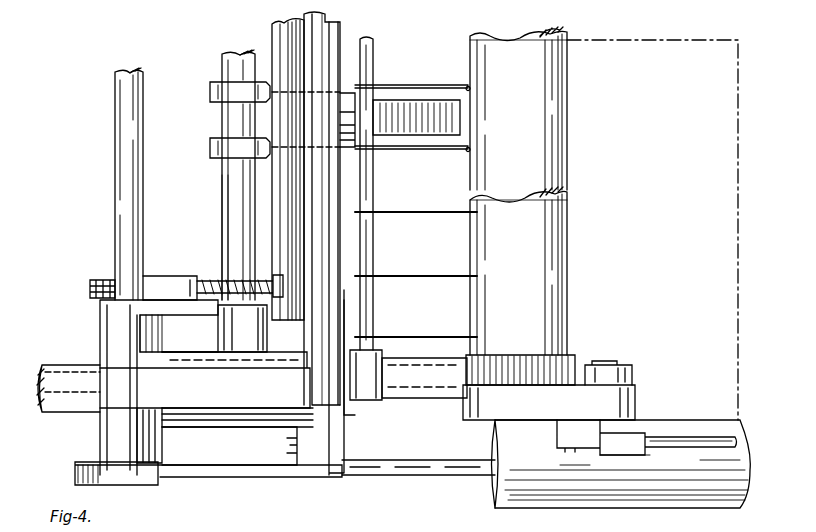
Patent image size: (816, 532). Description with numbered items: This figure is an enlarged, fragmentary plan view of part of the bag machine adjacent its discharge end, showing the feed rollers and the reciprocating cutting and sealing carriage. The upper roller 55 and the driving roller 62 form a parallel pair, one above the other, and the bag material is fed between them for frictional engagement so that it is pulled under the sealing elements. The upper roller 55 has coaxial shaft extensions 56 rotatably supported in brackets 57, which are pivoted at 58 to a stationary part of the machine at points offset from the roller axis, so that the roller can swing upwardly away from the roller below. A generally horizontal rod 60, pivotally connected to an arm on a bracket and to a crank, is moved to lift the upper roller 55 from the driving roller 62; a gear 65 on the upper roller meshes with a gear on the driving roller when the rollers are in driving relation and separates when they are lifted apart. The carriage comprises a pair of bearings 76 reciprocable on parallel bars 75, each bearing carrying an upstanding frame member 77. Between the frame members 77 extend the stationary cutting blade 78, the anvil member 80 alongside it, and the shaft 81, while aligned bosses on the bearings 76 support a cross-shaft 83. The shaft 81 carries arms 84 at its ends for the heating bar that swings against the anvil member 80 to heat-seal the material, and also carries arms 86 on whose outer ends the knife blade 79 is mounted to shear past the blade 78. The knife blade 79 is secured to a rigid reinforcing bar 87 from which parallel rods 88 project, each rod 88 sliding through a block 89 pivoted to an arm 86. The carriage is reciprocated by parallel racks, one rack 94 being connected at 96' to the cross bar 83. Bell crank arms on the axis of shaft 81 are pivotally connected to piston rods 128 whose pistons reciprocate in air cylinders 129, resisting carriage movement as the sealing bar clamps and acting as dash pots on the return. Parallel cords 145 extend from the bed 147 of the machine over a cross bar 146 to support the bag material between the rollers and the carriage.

The upper roller 55 is at (567, 207).
The shaft extensions 56 is at (621, 476).
The brackets 57 is at (523, 405).
The pivot 58 is at (619, 364).
The rod 60 is at (690, 440).
The driving roller 62 is at (567, 137).
The gear 65 is at (575, 355).
The bars 75 is at (69, 411).
The bearings 76 is at (263, 417).
The frame members 77 is at (211, 398).
The cutting blade 78 is at (311, 338).
The knife blade 79 is at (292, 228).
The anvil member 80 is at (318, 319).
The shaft 81 is at (118, 213).
The cross-shaft 83 is at (228, 192).
The arms 84 is at (245, 478).
The arms 86 is at (183, 306).
The reinforcing bar 87 is at (273, 255).
The rods 88 is at (247, 293).
The block 89 is at (165, 288).
The rack 94 is at (420, 115).
The connection 96' is at (211, 175).
The piston rods 128 is at (400, 475).
The cylinders 129 is at (710, 495).
The cords 145 is at (432, 214).
The cross bar 146 is at (371, 247).
The bed 147 is at (466, 163).